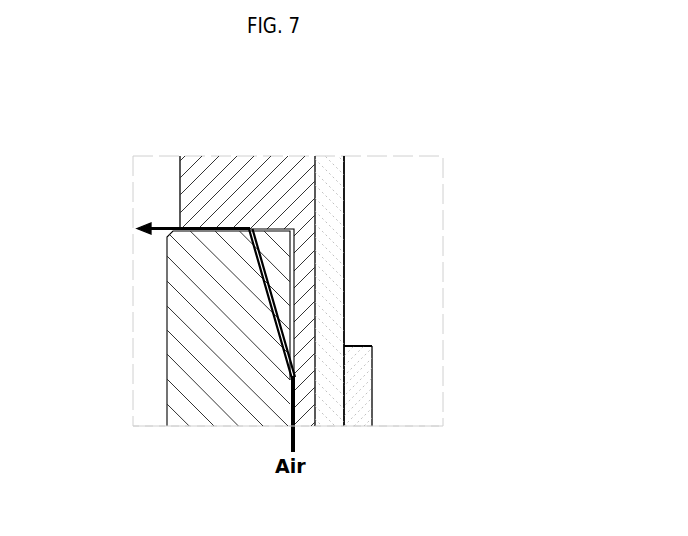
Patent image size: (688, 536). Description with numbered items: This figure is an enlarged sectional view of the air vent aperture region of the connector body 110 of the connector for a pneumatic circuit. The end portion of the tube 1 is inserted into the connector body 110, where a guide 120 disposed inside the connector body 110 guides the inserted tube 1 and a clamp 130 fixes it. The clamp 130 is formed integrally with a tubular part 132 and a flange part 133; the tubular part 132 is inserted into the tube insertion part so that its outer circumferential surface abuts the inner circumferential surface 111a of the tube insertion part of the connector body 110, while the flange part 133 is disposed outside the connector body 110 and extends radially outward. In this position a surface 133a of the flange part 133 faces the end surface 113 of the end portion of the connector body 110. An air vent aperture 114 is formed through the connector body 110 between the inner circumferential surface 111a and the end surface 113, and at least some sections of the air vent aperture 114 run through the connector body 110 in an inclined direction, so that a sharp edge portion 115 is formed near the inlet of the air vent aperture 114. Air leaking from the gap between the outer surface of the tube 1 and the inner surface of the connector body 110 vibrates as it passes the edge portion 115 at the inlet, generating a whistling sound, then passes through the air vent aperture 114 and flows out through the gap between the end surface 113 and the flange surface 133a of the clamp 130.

The tube 1 is at (344, 200).
The connector body 110 is at (167, 397).
The inner circumferential surface of the tube insertion part 111a is at (100, 291).
The end surface of the end portion of the connector body 113 is at (205, 228).
The air vent aperture 114 is at (292, 340).
The sharp edge portion 115 is at (292, 341).
The guide 120 is at (368, 393).
The clamp 130 is at (313, 400).
The tubular part 132 is at (307, 300).
The flange part 133 is at (283, 172).
The flange surface 133a is at (228, 234).